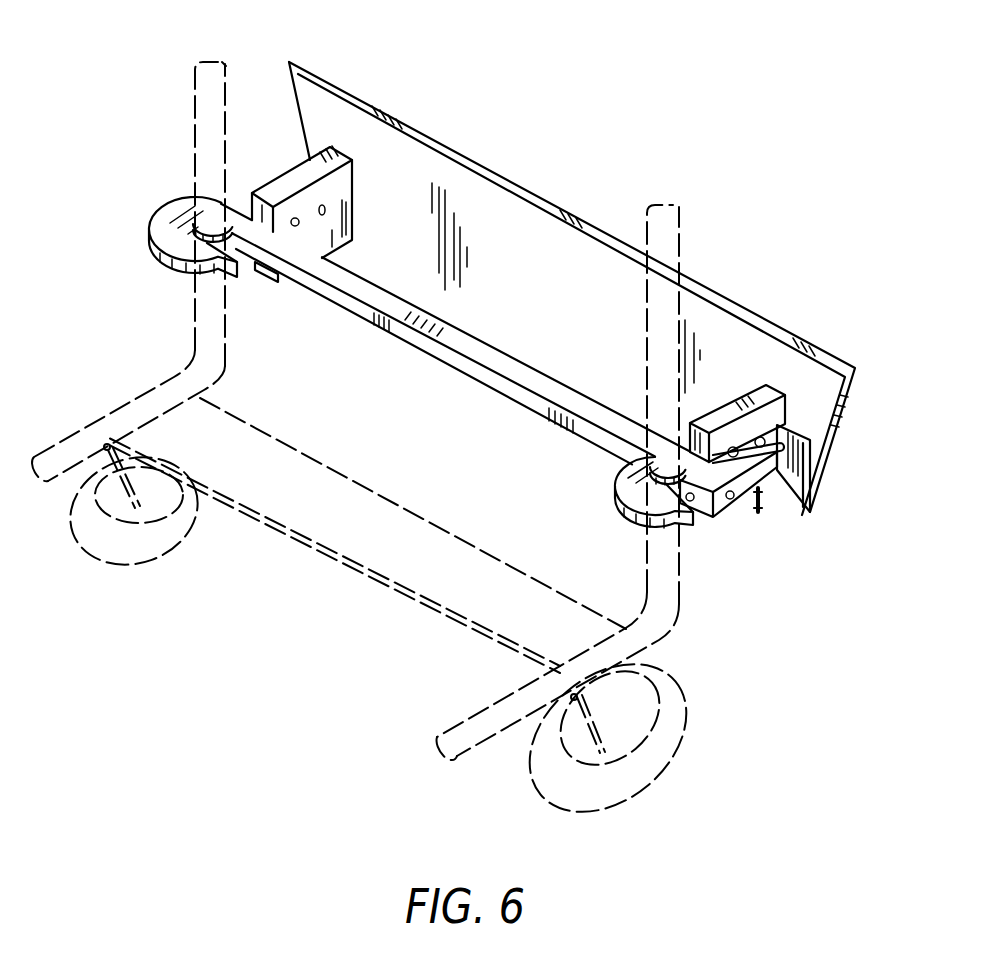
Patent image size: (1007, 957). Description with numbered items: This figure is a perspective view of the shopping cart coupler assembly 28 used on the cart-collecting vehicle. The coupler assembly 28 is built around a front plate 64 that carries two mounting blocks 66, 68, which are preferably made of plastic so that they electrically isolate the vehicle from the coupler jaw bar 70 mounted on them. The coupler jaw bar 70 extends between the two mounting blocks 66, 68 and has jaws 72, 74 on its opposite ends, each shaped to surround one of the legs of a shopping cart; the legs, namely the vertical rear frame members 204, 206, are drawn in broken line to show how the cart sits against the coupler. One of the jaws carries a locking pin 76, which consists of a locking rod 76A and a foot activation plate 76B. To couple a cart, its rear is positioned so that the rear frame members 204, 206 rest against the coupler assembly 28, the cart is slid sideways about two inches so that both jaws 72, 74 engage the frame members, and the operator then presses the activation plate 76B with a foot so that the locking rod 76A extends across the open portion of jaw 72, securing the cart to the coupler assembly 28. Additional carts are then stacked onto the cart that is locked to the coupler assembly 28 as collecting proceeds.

The shopping cart coupler assembly 28 is at (128, 145).
The front plate 64 is at (483, 193).
The mounting block 66 is at (305, 168).
The mounting block 68 is at (737, 400).
The coupler jaw bar 70 is at (433, 358).
The jaw 72 is at (150, 242).
The jaw 74 is at (628, 532).
The locking pin 76 is at (759, 512).
The locking rod 76A is at (770, 503).
The foot activation plate 76B is at (815, 462).
The vertical rear frame member 204 is at (208, 374).
The vertical rear frame member 206 is at (662, 632).